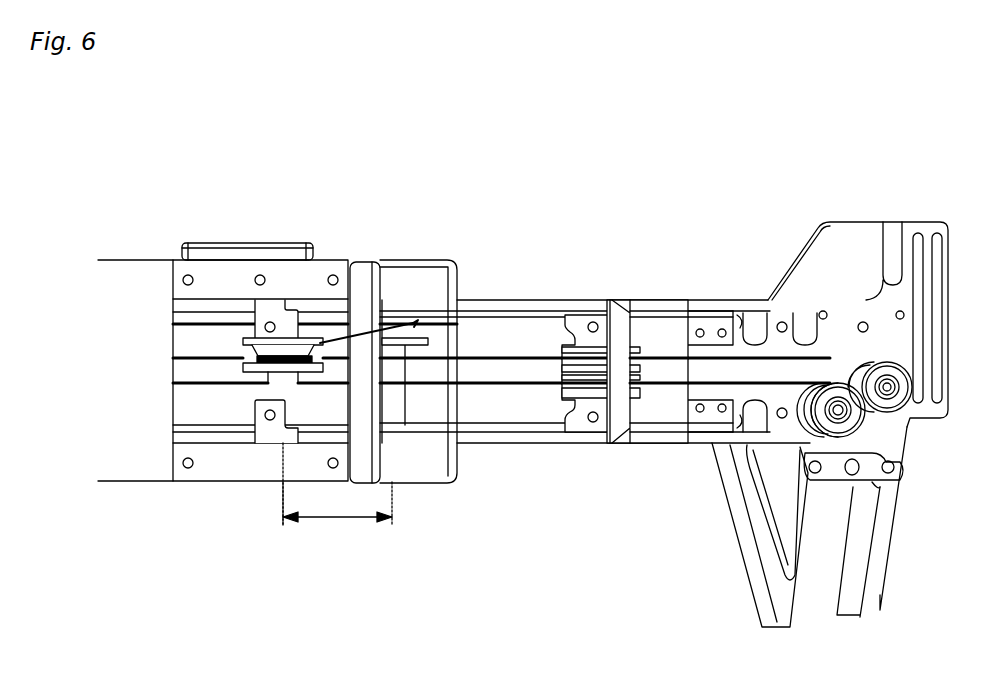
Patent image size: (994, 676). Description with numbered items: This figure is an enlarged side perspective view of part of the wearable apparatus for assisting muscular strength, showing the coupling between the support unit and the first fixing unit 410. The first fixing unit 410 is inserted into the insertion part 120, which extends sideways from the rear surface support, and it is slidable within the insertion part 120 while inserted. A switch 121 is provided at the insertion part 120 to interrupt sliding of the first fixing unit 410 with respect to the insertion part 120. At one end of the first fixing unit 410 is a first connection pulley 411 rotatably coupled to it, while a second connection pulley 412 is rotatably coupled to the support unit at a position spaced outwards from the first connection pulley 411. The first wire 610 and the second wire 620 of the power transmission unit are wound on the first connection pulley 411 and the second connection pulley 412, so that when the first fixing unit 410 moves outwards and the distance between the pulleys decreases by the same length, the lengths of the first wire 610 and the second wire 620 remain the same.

The insertion part 120 is at (133, 277).
The switch 121 is at (283, 248).
The first fixing unit 410 is at (660, 300).
The first connection pulley 411 is at (257, 346).
The second connection pulley 412 is at (430, 322).
The first wire 610 is at (213, 322).
The second wire 620 is at (220, 385).